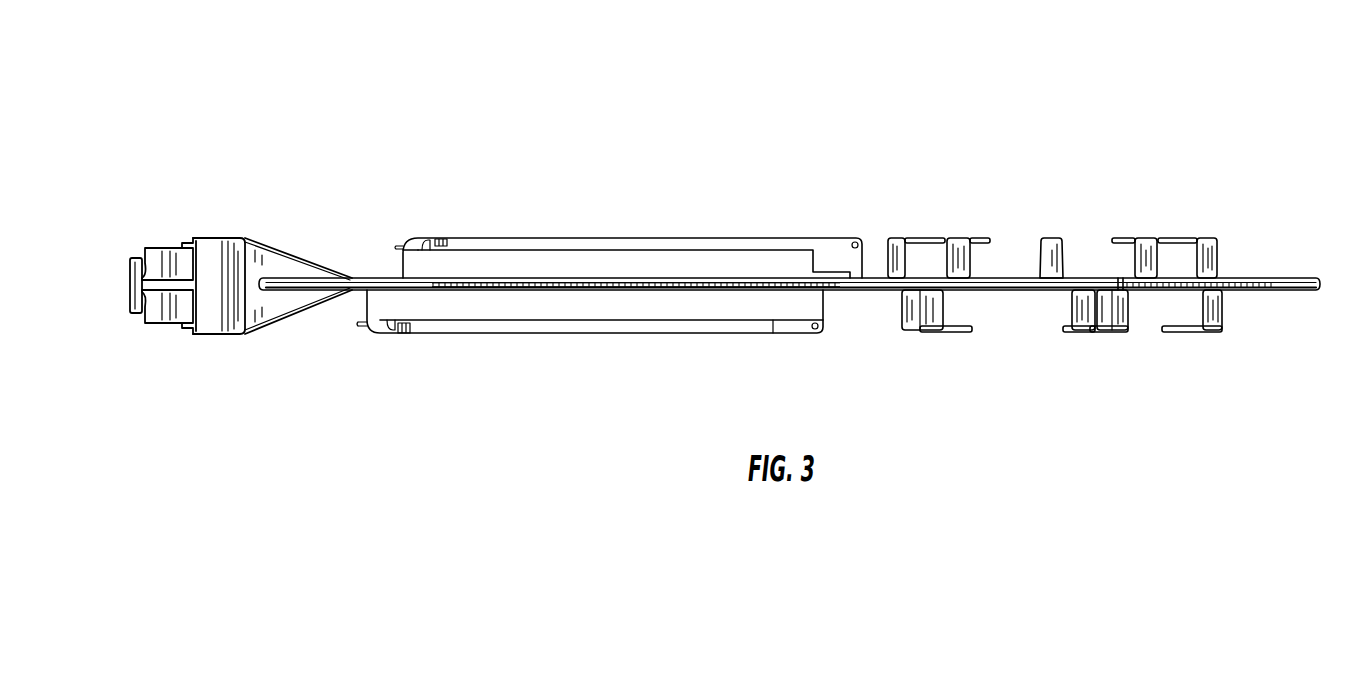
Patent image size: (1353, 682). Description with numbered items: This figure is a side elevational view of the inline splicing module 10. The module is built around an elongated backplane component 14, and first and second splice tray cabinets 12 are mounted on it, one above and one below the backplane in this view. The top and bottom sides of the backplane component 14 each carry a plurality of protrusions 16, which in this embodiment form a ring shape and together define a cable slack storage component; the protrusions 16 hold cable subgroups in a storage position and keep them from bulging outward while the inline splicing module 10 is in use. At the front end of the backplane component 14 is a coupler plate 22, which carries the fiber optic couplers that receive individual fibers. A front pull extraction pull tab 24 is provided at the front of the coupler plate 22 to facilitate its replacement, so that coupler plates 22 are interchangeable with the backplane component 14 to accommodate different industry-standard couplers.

The inline splicing module 10 is at (959, 88).
The splice tray cabinet 12 is at (508, 233).
The backplane component 14 is at (1280, 276).
The protrusion 16 is at (922, 237).
The coupler plate 22 is at (190, 257).
The front pull extraction pull tab 24 is at (130, 280).